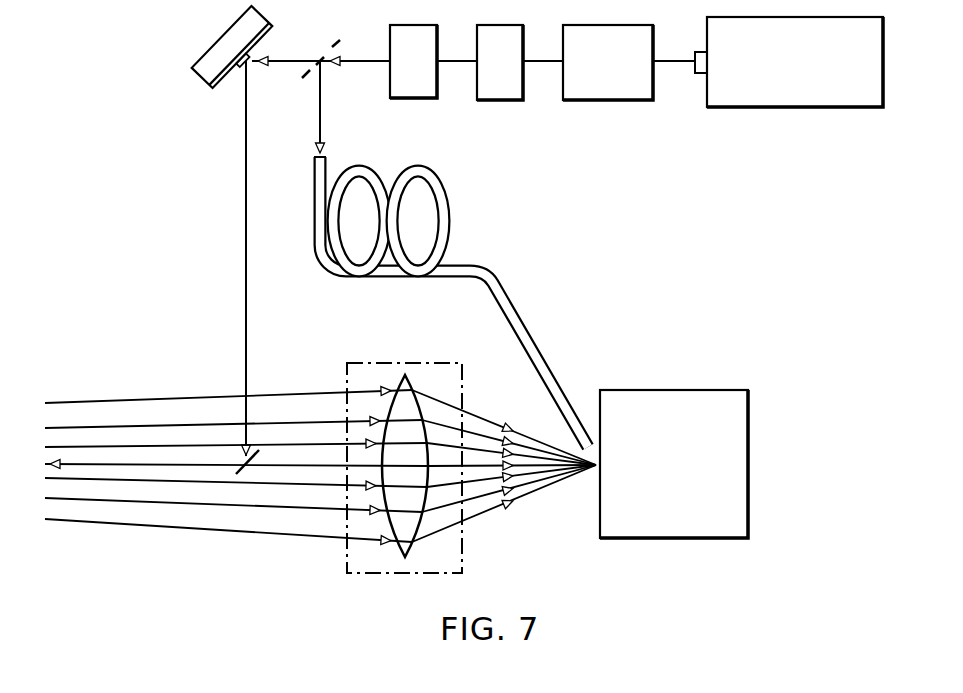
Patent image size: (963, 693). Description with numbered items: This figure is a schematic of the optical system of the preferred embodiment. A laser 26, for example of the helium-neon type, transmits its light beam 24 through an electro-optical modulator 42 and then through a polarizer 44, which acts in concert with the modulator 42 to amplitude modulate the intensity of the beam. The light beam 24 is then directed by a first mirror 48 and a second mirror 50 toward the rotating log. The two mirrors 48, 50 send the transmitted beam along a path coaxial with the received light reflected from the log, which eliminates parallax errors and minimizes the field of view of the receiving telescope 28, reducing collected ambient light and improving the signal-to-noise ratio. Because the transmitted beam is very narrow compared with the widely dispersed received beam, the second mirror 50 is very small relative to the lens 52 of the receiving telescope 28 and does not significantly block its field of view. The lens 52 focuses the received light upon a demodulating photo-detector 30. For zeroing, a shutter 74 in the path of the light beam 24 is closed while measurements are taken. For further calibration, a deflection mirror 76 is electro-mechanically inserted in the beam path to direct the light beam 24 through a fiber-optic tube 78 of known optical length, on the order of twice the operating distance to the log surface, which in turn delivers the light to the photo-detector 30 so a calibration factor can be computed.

The light beam 24 is at (672, 60).
The laser 26 is at (781, 88).
The receiving telescope 28 is at (355, 572).
The photo-detector 30 is at (664, 508).
The electro-optical modulator 42 is at (597, 71).
The polarizer 44 is at (489, 71).
The first mirror 48 is at (208, 46).
The second mirror 50 is at (250, 467).
The lens 52 is at (408, 523).
The shutter 74 is at (402, 69).
The deflection mirror 76 is at (322, 57).
The fiber-optic tube 78 is at (447, 217).